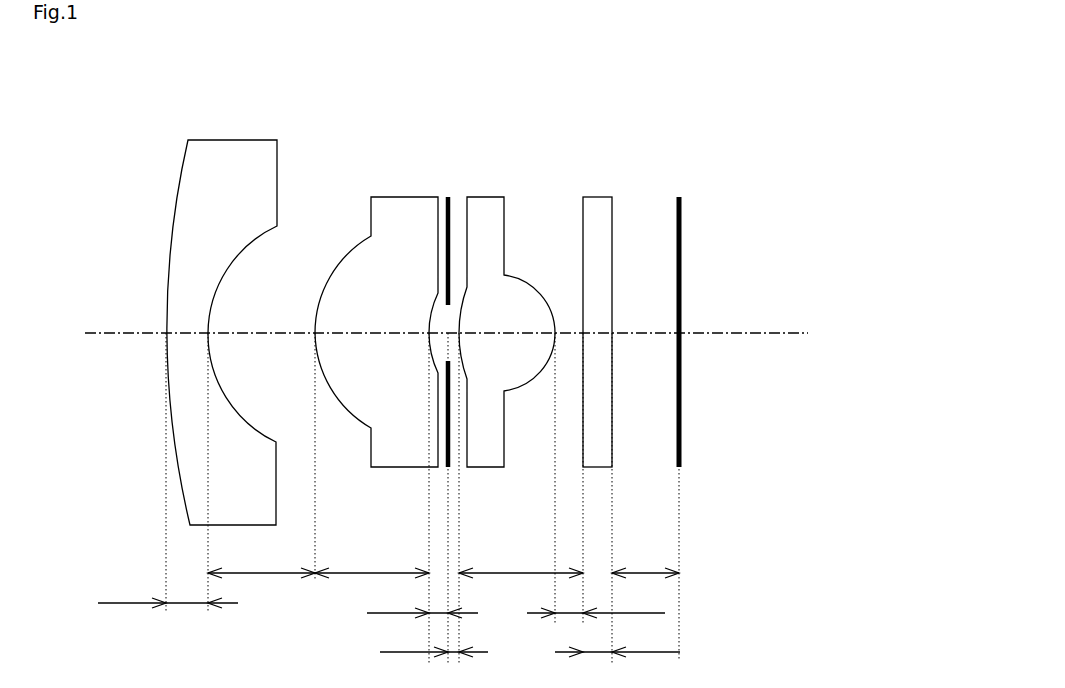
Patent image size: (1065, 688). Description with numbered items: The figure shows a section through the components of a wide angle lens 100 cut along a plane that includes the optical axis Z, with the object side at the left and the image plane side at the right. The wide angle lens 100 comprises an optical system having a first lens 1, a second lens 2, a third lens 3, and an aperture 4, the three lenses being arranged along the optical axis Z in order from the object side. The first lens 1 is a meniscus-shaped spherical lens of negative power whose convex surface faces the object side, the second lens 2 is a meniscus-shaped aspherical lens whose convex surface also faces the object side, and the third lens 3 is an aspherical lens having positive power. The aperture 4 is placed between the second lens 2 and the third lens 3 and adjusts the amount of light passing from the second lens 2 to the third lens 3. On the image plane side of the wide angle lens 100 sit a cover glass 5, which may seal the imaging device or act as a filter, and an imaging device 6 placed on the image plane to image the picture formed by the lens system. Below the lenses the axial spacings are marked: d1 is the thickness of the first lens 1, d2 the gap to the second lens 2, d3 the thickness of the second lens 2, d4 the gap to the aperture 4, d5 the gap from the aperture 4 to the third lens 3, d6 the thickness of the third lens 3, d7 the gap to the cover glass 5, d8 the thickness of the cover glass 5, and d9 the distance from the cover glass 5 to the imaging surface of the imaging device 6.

The wide angle lens 100 is at (540, 70).
The first lens 1 is at (250, 140).
The second lens 2 is at (397, 197).
The third lens 3 is at (490, 197).
The aperture 4 is at (450, 223).
The cover glass 5 is at (593, 197).
The imaging device 6 is at (680, 223).
The optical axis Z is at (753, 333).
The distance between Surfaces S1 and S2 d1 is at (168, 593).
The distance between Surfaces S2 and S3 d2 is at (261, 563).
The distance between Surfaces S3 and S4 d3 is at (372, 563).
The distance between Surfaces S4 and S5 d4 is at (422, 604).
The distance between Surfaces S5 and S6 d5 is at (434, 643).
The distance between Surfaces S6 and S7 d6 is at (521, 563).
The distance between Surfaces S7 and S8 d7 is at (596, 604).
The distance between Surfaces S8 and S9 d8 is at (617, 643).
The distance between Surface S9 and the imaging surface d9 is at (645, 563).